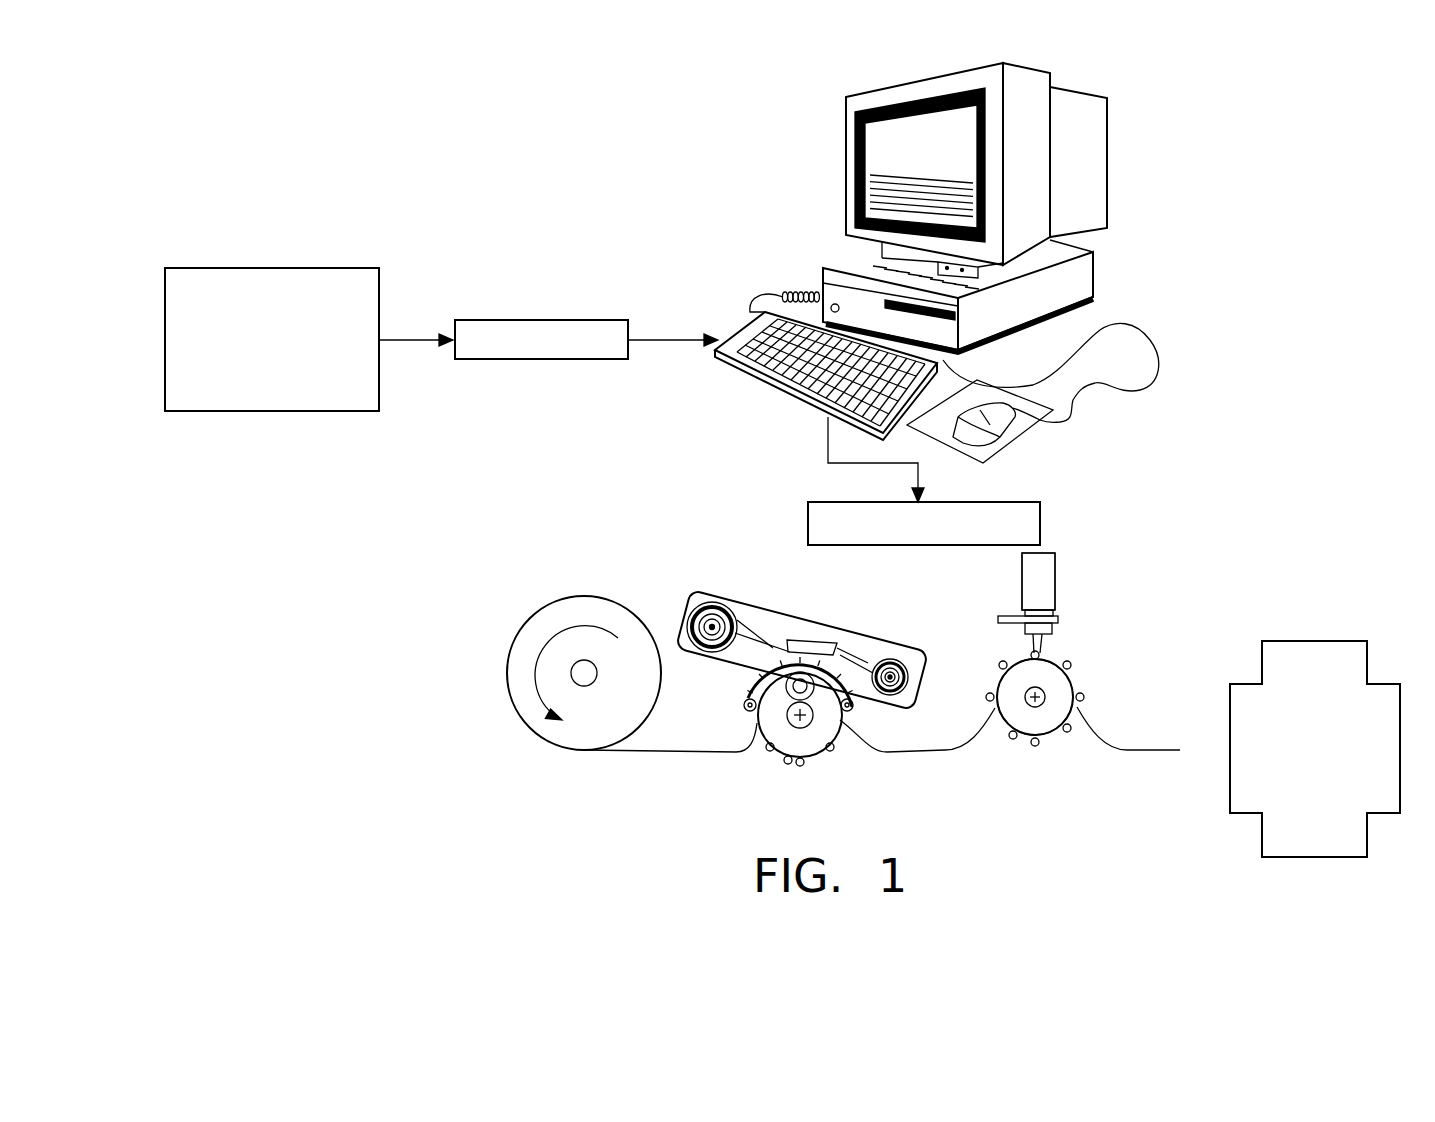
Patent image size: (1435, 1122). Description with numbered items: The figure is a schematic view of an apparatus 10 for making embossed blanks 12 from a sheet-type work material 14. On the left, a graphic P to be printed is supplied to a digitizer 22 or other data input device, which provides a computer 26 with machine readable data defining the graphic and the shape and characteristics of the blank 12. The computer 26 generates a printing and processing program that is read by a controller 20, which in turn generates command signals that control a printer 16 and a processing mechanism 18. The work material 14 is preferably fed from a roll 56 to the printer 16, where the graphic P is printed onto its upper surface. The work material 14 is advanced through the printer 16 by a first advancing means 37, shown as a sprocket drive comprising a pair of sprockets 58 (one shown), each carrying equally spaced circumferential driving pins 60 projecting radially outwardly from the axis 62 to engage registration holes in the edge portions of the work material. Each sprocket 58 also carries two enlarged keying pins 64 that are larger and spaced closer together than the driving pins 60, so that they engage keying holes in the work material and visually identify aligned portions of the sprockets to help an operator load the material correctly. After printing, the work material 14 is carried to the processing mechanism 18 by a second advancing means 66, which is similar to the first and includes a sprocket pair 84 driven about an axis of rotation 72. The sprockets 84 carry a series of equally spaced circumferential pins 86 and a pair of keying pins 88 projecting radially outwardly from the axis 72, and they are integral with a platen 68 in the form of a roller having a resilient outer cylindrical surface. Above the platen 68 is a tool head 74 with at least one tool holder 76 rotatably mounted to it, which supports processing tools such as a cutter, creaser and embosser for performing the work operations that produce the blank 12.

The graphic P is at (293, 267).
The apparatus 10 is at (1209, 268).
The embossed blank 12 is at (1287, 641).
The sheet-type work material 14 is at (673, 752).
The printer 16 is at (754, 580).
The processing mechanism 18 is at (1075, 532).
The controller 20 is at (997, 502).
The digitizer 22 is at (538, 320).
The computer 26 is at (846, 150).
The first advancing means 37 is at (712, 764).
The roll 56 is at (620, 618).
The sprocket 58 is at (808, 742).
The driving pins 60 is at (830, 748).
The axis 62 is at (803, 710).
The keying pins 64 is at (788, 762).
The second advancing means 66 is at (1060, 765).
The platen 68 is at (1050, 655).
The axis of rotation 72 is at (1040, 692).
The tool head 74 is at (1055, 578).
The tool holder 76 is at (1057, 620).
The sprocket pair 84 is at (1050, 740).
The pins 86 is at (1000, 667).
The keying pins 88 is at (1022, 738).